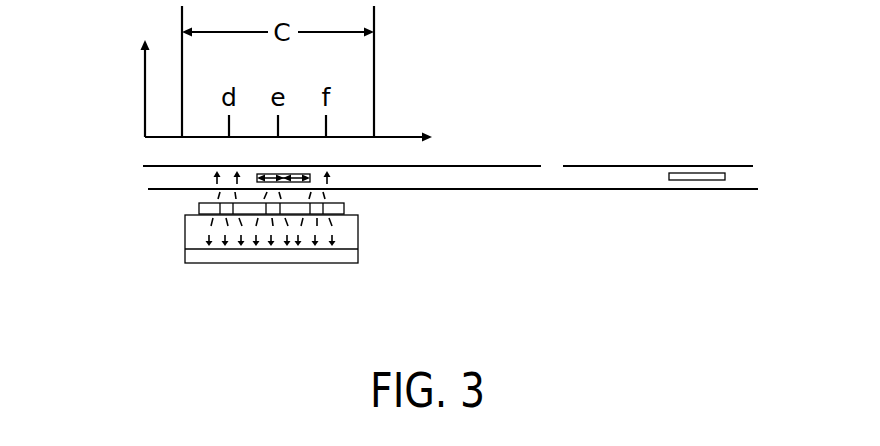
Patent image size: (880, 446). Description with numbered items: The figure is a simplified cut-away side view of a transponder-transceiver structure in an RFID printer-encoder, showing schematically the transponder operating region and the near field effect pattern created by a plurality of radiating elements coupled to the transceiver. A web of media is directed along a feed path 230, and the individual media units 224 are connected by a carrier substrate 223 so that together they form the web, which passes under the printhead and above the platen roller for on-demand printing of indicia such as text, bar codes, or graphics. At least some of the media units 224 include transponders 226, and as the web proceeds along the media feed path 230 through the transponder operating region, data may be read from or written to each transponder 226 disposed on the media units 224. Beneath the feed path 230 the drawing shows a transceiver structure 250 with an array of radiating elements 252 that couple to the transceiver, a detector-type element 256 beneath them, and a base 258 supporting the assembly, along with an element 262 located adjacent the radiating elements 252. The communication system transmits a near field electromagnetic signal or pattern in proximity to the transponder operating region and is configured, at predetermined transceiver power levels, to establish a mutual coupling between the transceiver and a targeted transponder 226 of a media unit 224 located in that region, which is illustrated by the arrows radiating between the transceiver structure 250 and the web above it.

The feed path 230 is at (636, 41).
The carrier substrate 223 is at (605, 190).
The media unit 224 is at (598, 166).
The transponder 226 is at (313, 167).
The sensor assembly 250 is at (243, 259).
The emitter array 252 is at (230, 208).
The reflective marker 262 is at (326, 193).
The detector 256 is at (350, 237).
The base substrate 258 is at (230, 255).